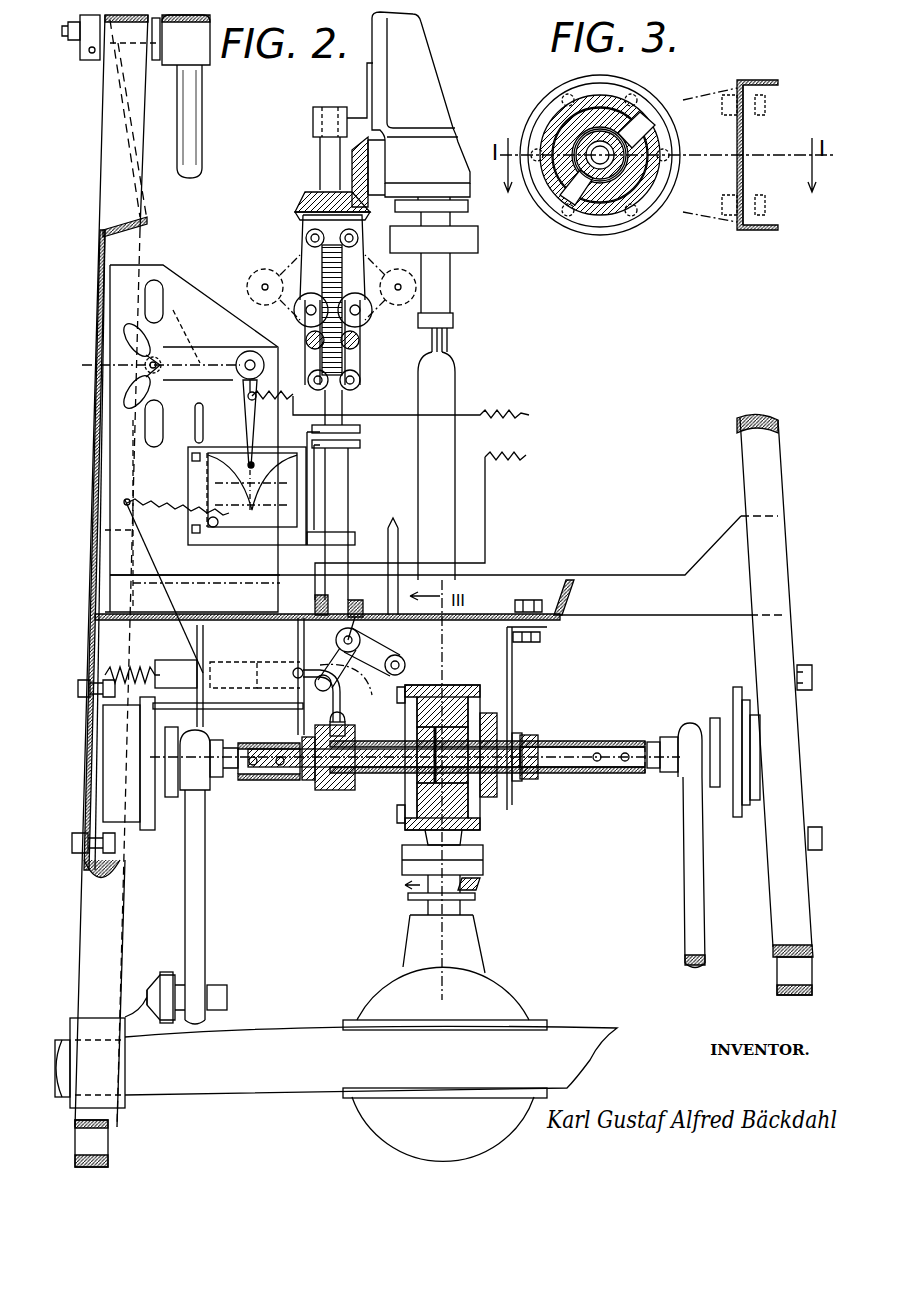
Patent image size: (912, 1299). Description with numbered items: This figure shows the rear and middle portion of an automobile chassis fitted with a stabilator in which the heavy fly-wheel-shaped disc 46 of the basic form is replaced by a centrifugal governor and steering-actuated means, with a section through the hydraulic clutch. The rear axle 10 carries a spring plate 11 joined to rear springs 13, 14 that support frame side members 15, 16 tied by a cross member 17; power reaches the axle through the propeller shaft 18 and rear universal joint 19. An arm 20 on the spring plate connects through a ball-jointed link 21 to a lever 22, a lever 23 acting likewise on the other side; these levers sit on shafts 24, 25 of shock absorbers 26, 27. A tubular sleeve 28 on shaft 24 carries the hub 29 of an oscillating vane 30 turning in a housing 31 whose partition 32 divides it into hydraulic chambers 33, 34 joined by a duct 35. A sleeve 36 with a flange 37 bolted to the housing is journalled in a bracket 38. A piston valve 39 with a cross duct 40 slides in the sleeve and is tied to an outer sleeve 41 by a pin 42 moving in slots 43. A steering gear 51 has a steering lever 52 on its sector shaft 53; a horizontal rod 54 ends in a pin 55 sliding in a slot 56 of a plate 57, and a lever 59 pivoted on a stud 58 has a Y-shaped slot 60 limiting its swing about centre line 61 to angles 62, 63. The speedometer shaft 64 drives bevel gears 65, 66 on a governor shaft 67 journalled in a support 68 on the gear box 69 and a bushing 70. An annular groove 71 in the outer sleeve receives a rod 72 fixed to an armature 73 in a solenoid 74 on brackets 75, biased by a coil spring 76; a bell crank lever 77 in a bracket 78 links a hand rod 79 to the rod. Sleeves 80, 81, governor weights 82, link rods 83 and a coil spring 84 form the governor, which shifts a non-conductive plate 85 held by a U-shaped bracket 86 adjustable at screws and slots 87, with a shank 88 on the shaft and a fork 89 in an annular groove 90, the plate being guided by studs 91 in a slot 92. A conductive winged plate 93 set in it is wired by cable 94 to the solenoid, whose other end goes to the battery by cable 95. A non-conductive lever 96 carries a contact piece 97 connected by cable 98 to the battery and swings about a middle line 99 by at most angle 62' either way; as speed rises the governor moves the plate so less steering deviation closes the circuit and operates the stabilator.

In FIG. 2, the rear axle 10 is at (330, 1055).
In FIG. 2, the spring plate 11 is at (127, 1098).
In FIG. 2, the longitudinal rear spring 13 is at (93, 1143).
In FIG. 2, the longitudinal rear spring 14 is at (797, 972).
In FIG. 2, the frame side member 15 is at (93, 983).
In FIG. 2, the frame side member 16 is at (768, 455).
In FIG. 3, the cross member 17 is at (752, 167).
In FIG. 2, the cross member 17 is at (638, 593).
In FIG. 2, the propeller shaft 18 is at (432, 462).
In FIG. 2, the rear universal joint 19 is at (467, 852).
In FIG. 2, the arm 20 is at (122, 997).
In FIG. 2, the ball-jointed link 21 is at (175, 990).
In FIG. 2, the lever 22 is at (193, 915).
In FIG. 2, the lever 23 is at (692, 883).
In FIG. 2, the shaft 24 is at (233, 772).
In FIG. 2, the shaft 25 is at (655, 758).
In FIG. 2, the shock absorber 26 is at (117, 773).
In FIG. 2, the shock absorber 27 is at (748, 735).
In FIG. 3, the tubular shaft or sleeve 28 is at (702, 212).
In FIG. 2, the tubular shaft or sleeve 28 is at (267, 780).
In FIG. 3, the hub 29 is at (613, 182).
In FIG. 2, the hub 29 is at (465, 785).
In FIG. 3, the oscillating vane 30 is at (598, 98).
In FIG. 3, the housing 31 is at (662, 185).
In FIG. 2, the housing 31 is at (455, 697).
In FIG. 3, the partition 32 is at (612, 213).
In FIG. 3, the hydraulic chamber 33 is at (643, 133).
In FIG. 2, the hydraulic chamber 33 is at (463, 705).
In FIG. 3, the hydraulic chamber 34 is at (577, 172).
In FIG. 2, the hydraulic chamber 34 is at (405, 825).
In FIG. 3, the duct 35 is at (618, 155).
In FIG. 2, the duct 35 is at (500, 745).
In FIG. 2, the sleeve 36 is at (570, 775).
In FIG. 2, the flange 37 is at (512, 703).
In FIG. 2, the bracket 38 is at (508, 685).
In FIG. 3, the piston valve 39 is at (622, 110).
In FIG. 2, the piston valve 39 is at (372, 772).
In FIG. 2, the cross duct 40 is at (540, 733).
In FIG. 2, the outer sleeve 41 is at (336, 790).
In FIG. 2, the pin 42 is at (303, 782).
In FIG. 2, the longitudinal slots 43 is at (328, 790).
In FIG. 3, the fly-wheel-shaped disc 46 is at (644, 228).
In FIG. 2, the steering gear 51 is at (195, 28).
In FIG. 2, the steering lever 52 is at (88, 32).
In FIG. 2, the horizontal sector shaft 53 is at (153, 33).
In FIG. 2, the horizontal rod 54 is at (125, 127).
In FIG. 2, the vertical pin 55 is at (148, 364).
In FIG. 2, the slot 56 is at (157, 410).
In FIG. 2, the horizontal plate 57 is at (133, 291).
In FIG. 2, the stud 58 is at (245, 350).
In FIG. 2, the lever 59 is at (176, 300).
In FIG. 2, the Y-shaped slot 60 is at (133, 337).
In FIG. 2, the centre line 61 is at (84, 368).
In FIG. 2, the angle 62 is at (220, 309).
In FIG. 2, the angle 62' is at (128, 479).
In FIG. 2, the angle 63 is at (258, 430).
In FIG. 2, the speedometer shaft 64 is at (383, 167).
In FIG. 2, the bevel gear 65 is at (370, 157).
In FIG. 2, the bevel gear 66 is at (310, 212).
In FIG. 2, the governor shaft 67 is at (330, 167).
In FIG. 2, the support 68 is at (337, 107).
In FIG. 2, the gear box 69 is at (403, 57).
In FIG. 2, the bushing 70 is at (303, 625).
In FIG. 2, the annular groove 71 is at (325, 730).
In FIG. 2, the rod 72 is at (340, 693).
In FIG. 2, the armature 73 is at (178, 672).
In FIG. 2, the solenoid 74 is at (263, 698).
In FIG. 2, the brackets 75 is at (218, 603).
In FIG. 2, the coil spring 76 is at (113, 673).
In FIG. 2, the bell crank lever 77 is at (398, 655).
In FIG. 2, the bracket 78 is at (343, 635).
In FIG. 2, the rod 79 is at (398, 545).
In FIG. 2, the sleeve 80 is at (327, 230).
In FIG. 2, the sleeve 81 is at (362, 385).
In FIG. 2, the governor weights 82 is at (367, 312).
In FIG. 2, the link rods 83 is at (350, 272).
In FIG. 2, the coil spring 84 is at (360, 339).
In FIG. 2, the plate 85 is at (245, 540).
In FIG. 2, the U-shaped bracket 86 is at (312, 482).
In FIG. 2, the screws and slots 87 is at (316, 462).
In FIG. 2, the shank 88 is at (337, 540).
In FIG. 2, the fork 89 is at (350, 444).
In FIG. 2, the annular groove 90 is at (360, 430).
In FIG. 2, the studs 91 is at (192, 461).
In FIG. 2, the slot 92 is at (198, 420).
In FIG. 2, the plate 93 is at (230, 513).
In FIG. 2, the insulated cable 94 is at (175, 573).
In FIG. 2, the cable 95 is at (487, 525).
In FIG. 2, the lever 96 is at (272, 300).
In FIG. 2, the contact piece 97 is at (208, 520).
In FIG. 2, the insulated cable 98 is at (480, 413).
In FIG. 2, the middle line 99 is at (253, 515).